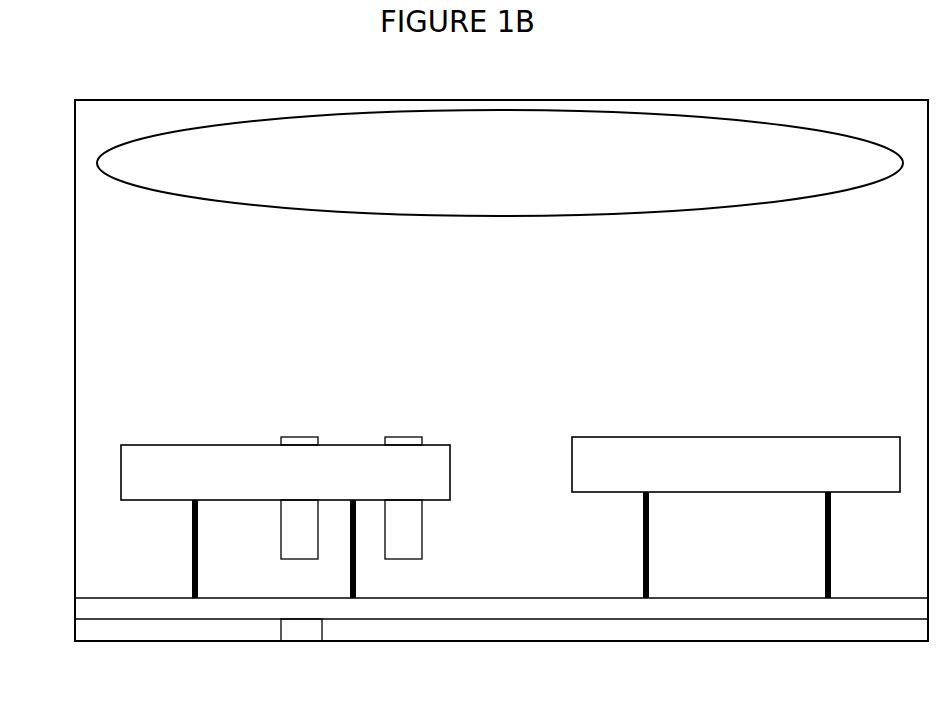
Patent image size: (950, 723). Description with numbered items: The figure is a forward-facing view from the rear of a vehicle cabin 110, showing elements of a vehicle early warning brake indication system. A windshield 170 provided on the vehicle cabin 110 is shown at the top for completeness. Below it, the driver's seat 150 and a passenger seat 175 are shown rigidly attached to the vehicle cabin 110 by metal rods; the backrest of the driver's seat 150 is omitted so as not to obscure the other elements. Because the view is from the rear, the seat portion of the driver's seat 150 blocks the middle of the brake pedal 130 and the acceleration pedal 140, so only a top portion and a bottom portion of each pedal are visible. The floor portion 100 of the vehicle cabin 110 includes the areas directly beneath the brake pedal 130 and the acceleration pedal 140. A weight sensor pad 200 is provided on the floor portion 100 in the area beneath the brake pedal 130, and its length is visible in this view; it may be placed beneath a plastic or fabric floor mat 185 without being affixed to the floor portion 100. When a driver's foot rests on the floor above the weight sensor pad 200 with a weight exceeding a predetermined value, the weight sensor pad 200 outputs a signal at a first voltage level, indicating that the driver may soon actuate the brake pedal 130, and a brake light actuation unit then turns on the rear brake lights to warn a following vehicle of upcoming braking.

The vehicle cabin 110 is at (748, 77).
The windshield 170 is at (548, 202).
The driver's seat 150 is at (135, 473).
The brake pedal 130 is at (288, 437).
The acceleration pedal 140 is at (408, 437).
The passenger seat 175 is at (682, 475).
The floor mat 185 is at (108, 600).
The floor portion 100 is at (768, 638).
The weight sensor pad 200 is at (312, 627).